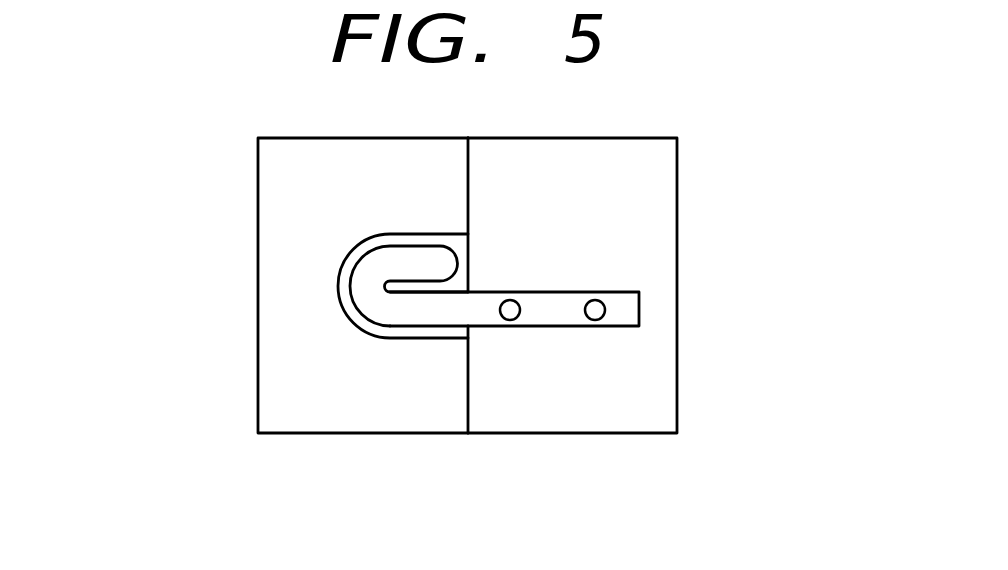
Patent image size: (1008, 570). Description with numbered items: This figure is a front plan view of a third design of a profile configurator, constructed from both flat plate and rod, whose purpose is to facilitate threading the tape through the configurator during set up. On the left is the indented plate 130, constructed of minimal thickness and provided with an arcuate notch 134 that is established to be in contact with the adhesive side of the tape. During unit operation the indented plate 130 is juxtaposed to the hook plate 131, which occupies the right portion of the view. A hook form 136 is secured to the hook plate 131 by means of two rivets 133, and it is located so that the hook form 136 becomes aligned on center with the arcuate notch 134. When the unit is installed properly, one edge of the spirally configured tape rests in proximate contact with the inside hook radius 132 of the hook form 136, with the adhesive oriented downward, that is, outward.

The indented plate 130 is at (313, 193).
The hook plate 131 is at (633, 192).
The inside hook radius 132 is at (385, 282).
The rivets 133 is at (595, 310).
The arcuate notch 134 is at (352, 322).
The hook form 136 is at (442, 310).